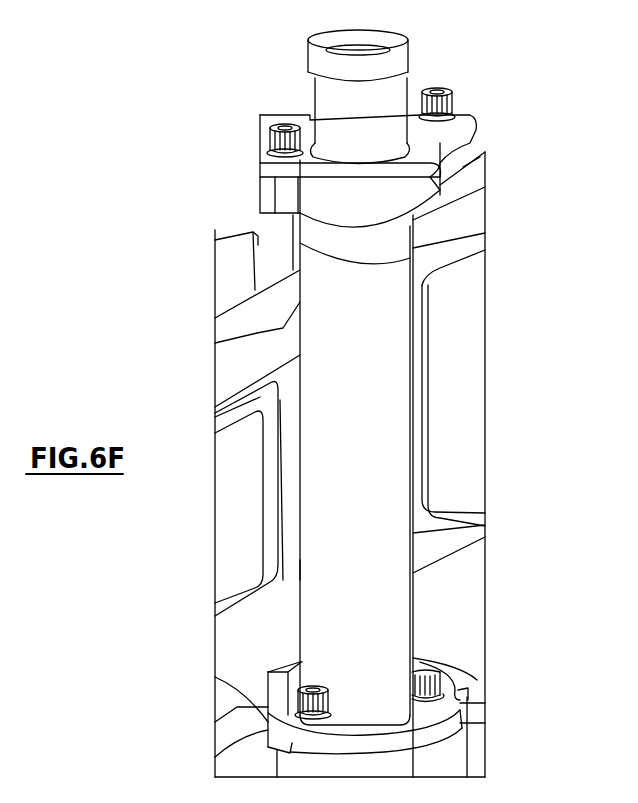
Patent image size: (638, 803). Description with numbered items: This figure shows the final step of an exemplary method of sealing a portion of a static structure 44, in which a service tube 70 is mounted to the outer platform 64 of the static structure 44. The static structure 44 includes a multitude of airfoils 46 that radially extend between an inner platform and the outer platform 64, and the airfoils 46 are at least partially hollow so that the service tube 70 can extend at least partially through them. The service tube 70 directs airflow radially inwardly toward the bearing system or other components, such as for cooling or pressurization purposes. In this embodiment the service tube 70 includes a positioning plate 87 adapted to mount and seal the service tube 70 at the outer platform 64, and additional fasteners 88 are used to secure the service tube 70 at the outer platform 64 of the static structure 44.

The static structure 44 is at (530, 198).
The airfoils 46 is at (278, 460).
The outer platform 64 is at (487, 155).
The service tube 70 is at (378, 397).
The positioning plate 87 is at (328, 193).
The fasteners 88 is at (283, 128).